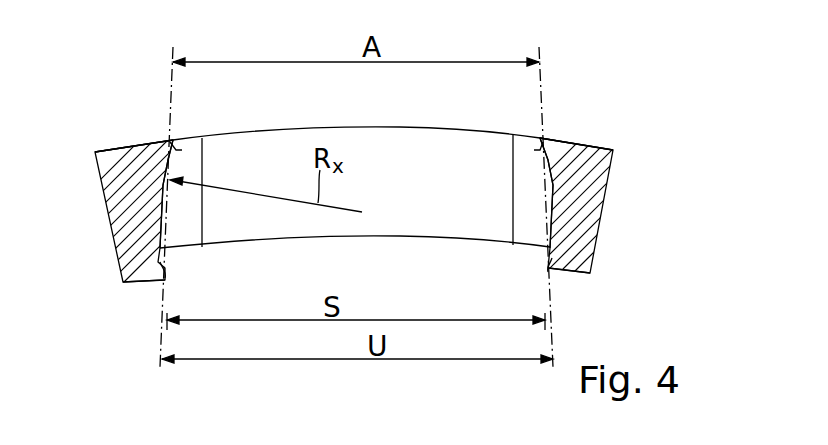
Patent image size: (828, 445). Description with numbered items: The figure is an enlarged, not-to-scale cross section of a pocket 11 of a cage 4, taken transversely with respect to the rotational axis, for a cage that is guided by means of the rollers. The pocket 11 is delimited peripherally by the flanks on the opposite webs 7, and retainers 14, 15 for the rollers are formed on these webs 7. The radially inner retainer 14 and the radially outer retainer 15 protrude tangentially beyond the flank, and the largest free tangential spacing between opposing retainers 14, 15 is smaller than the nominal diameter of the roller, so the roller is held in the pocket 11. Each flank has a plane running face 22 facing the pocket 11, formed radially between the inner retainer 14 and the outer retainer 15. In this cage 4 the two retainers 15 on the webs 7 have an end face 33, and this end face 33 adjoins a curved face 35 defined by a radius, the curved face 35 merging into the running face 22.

The cage 4 is at (616, 125).
The web 7 is at (597, 208).
The pocket 11 is at (410, 158).
The retainer 14 is at (142, 290).
The retainer 15 is at (168, 140).
The running face 22 is at (165, 243).
The end face 33 is at (173, 144).
The curved face 35 is at (163, 180).